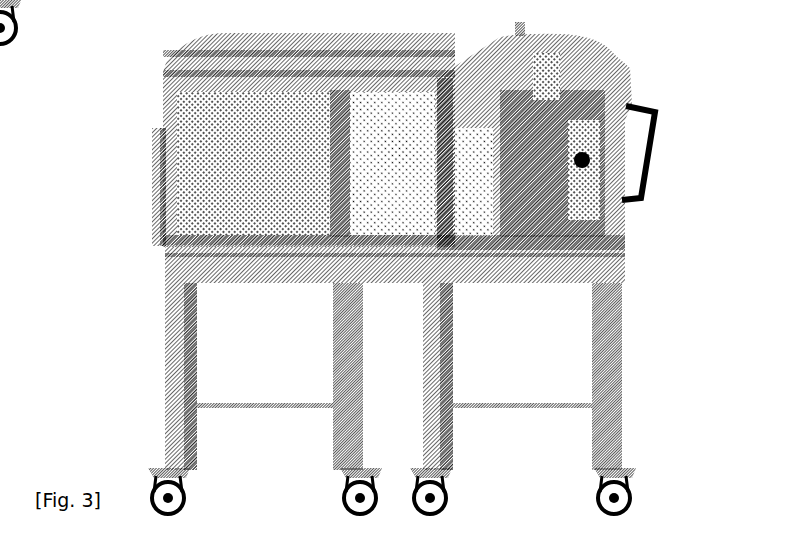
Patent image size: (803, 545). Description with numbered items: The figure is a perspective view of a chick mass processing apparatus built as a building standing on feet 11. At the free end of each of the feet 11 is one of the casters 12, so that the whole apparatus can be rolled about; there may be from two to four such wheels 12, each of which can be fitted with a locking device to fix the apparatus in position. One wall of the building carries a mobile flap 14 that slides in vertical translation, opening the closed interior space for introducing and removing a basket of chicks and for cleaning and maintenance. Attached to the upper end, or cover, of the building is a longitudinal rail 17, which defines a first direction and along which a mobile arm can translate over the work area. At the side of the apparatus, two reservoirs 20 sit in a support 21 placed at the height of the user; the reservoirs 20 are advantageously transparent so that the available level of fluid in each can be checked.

The feet 11 is at (622, 325).
The casters 12 is at (640, 493).
The mobile flap 14 is at (152, 160).
The longitudinal rail 17 is at (160, 110).
The reservoirs 20 is at (640, 78).
The support 21 is at (637, 203).